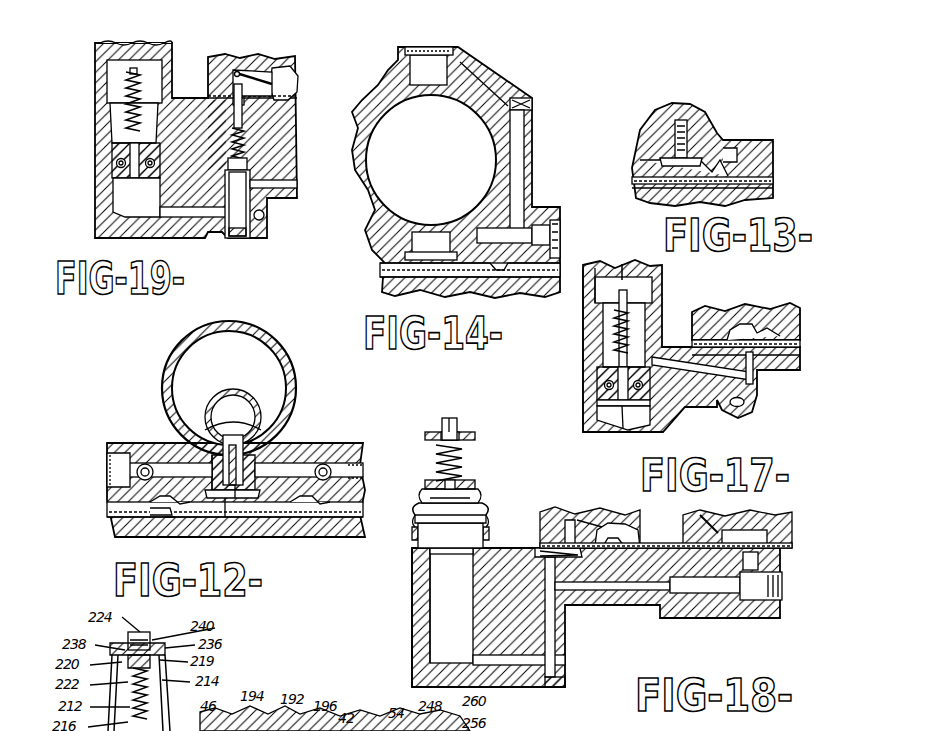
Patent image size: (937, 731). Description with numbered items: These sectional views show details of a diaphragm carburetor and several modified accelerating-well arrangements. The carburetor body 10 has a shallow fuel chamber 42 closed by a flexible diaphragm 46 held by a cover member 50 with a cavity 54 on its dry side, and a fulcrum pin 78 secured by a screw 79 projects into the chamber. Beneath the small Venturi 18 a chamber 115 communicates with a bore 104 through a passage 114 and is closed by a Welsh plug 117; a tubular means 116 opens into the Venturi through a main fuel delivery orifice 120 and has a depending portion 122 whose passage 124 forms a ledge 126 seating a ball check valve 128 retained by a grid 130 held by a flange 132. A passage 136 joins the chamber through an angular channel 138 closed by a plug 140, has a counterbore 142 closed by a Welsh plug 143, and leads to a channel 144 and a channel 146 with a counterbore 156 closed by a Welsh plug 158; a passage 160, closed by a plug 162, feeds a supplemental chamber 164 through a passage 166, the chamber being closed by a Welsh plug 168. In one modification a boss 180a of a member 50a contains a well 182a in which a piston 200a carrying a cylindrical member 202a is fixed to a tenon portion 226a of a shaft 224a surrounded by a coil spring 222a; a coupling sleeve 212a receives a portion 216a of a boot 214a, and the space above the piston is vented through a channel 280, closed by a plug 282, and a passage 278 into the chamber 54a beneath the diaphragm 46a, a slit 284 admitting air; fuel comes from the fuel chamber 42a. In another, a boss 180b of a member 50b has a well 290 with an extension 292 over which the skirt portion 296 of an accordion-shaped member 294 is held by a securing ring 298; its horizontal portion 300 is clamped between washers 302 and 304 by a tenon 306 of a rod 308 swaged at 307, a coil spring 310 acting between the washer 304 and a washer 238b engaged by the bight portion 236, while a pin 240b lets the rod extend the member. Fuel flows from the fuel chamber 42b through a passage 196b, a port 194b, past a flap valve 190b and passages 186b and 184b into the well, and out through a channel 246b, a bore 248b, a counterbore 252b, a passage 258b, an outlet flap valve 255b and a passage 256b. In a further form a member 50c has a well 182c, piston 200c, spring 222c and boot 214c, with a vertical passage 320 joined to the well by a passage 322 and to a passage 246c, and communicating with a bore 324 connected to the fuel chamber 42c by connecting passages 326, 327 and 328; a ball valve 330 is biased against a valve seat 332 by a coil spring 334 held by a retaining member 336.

In FIG. 13, the carburetor body 10 is at (772, 129).
In FIG. 12, the carburetor body 10 is at (212, 317).
In FIG. 12, the supplemental Venturi 18 is at (236, 386).
In FIG. 13, the fuel chamber 42 is at (644, 167).
In FIG. 12, the fuel chamber 42 is at (300, 510).
In FIG. 12, the flexible diaphragm 46 is at (144, 534).
In FIG. 13, the cover member 50 is at (770, 195).
In FIG. 12, the central recess 54 is at (264, 531).
In FIG. 13, the fulcrum pin 78 is at (703, 152).
In FIG. 13, the screw 79 is at (690, 117).
In FIG. 12, the bore 104 is at (316, 465).
In FIG. 12, the passage 114 is at (283, 470).
In FIG. 12, the chamber 115 is at (286, 452).
In FIG. 12, the tubular means 116 is at (290, 432).
In FIG. 12, the Welsh plug 117 is at (224, 500).
In FIG. 12, the main fuel delivery orifice 120 is at (265, 403).
In FIG. 12, the depending portion 122 is at (280, 515).
In FIG. 12, the passage 124 is at (234, 495).
In FIG. 12, the ledge 126 is at (209, 460).
In FIG. 12, the ball check valve 128 is at (200, 426).
In FIG. 12, the grid 130 is at (245, 415).
In FIG. 12, the flange 132 is at (233, 417).
In FIG. 12, the passage 136 is at (157, 483).
In FIG. 12, the angular channel 138 is at (183, 517).
In FIG. 12, the plug 140 is at (154, 507).
In FIG. 12, the counterbore 142 is at (112, 465).
In FIG. 12, the Welsh plug 143 is at (108, 474).
In FIG. 12, the channel 144 is at (133, 460).
In FIG. 14, the channel 146 is at (486, 233).
In FIG. 14, the counterbore 156 is at (540, 230).
In FIG. 14, the Welsh plug 158 is at (560, 232).
In FIG. 14, the passage 160 is at (518, 124).
In FIG. 14, the plug 162 is at (520, 100).
In FIG. 14, the supplemental chamber 164 is at (414, 72).
In FIG. 14, the passage 166 is at (470, 82).
In FIG. 14, the Welsh plug 168 is at (432, 50).
In FIG. 17, the boss 180a is at (590, 392).
In FIG. 18, the boss 180b is at (404, 636).
In FIG. 17, the well 182a is at (605, 422).
In FIG. 19, the well 182c is at (116, 195).
In FIG. 18, the passage 184b is at (530, 664).
In FIG. 18, the passage 186b is at (557, 624).
In FIG. 18, the flap valve 190b is at (537, 557).
In FIG. 18, the port 194b is at (568, 520).
In FIG. 18, the passage 196b is at (600, 520).
In FIG. 17, the piston 200a is at (600, 382).
In FIG. 19, the piston 200c is at (112, 162).
In FIG. 17, the cylindrical member 202a is at (604, 404).
In FIG. 17, the coupling sleeve 212a is at (600, 345).
In FIG. 17, the boot 214a is at (660, 283).
In FIG. 19, the boot 214c is at (97, 48).
In FIG. 17, the portion 216a is at (584, 319).
In FIG. 17, the coil spring 222a is at (635, 329).
In FIG. 19, the spring 222c is at (126, 110).
In FIG. 17, the shaft 224a is at (630, 298).
In FIG. 17, the tenon portion 226a is at (626, 412).
In FIG. 18, the bight portion 236 is at (468, 432).
In FIG. 18, the washer 238b is at (475, 440).
In FIG. 18, the pin 240b is at (452, 420).
In FIG. 18, the channel 246b is at (629, 591).
In FIG. 19, the passage 246c is at (277, 190).
In FIG. 18, the bore 248b is at (700, 594).
In FIG. 18, the counterbore 252b is at (762, 600).
In FIG. 18, the outlet flap valve 255b is at (768, 540).
In FIG. 18, the passage 256b is at (704, 537).
In FIG. 18, the passage 258b is at (760, 562).
In FIG. 17, the passage 278 is at (750, 370).
In FIG. 17, the channel 280 is at (706, 401).
In FIG. 17, the plug 282 is at (750, 384).
In FIG. 17, the slit 284 is at (630, 270).
In FIG. 18, the well 290 is at (456, 617).
In FIG. 18, the circular extension 292 is at (446, 605).
In FIG. 18, the accordion-shaped member 294 is at (486, 504).
In FIG. 18, the skirt portion 296 is at (468, 550).
In FIG. 18, the securing ring 298 is at (414, 536).
In FIG. 18, the horizontal portion 300 is at (428, 492).
In FIG. 18, the washer 302 is at (472, 492).
In FIG. 18, the washer 304 is at (468, 482).
In FIG. 18, the tenon 306 is at (442, 482).
In FIG. 18, the swaged end 307 is at (418, 508).
In FIG. 18, the rod 308 is at (446, 418).
In FIG. 18, the coil spring 310 is at (437, 454).
In FIG. 19, the vertical passage 320 is at (246, 222).
In FIG. 19, the passage 322 is at (190, 215).
In FIG. 19, the bore 324 is at (228, 150).
In FIG. 19, the connecting passage 326 is at (260, 78).
In FIG. 19, the connecting passage 327 is at (236, 71).
In FIG. 19, the connecting passage 328 is at (246, 75).
In FIG. 19, the ball valve 330 is at (244, 118).
In FIG. 19, the valve seat 332 is at (246, 102).
In FIG. 19, the coil spring 334 is at (246, 142).
In FIG. 19, the retaining member 336 is at (250, 164).
In FIG. 17, the fuel chamber 42a is at (795, 336).
In FIG. 18, the fuel chamber 42b is at (615, 529).
In FIG. 19, the fuel chamber 42c is at (288, 74).
In FIG. 17, the diaphragm 46a is at (762, 318).
In FIG. 17, the member 50a is at (800, 358).
In FIG. 18, the member 50b is at (793, 614).
In FIG. 19, the member 50c is at (199, 82).
In FIG. 17, the chamber 54a is at (782, 371).